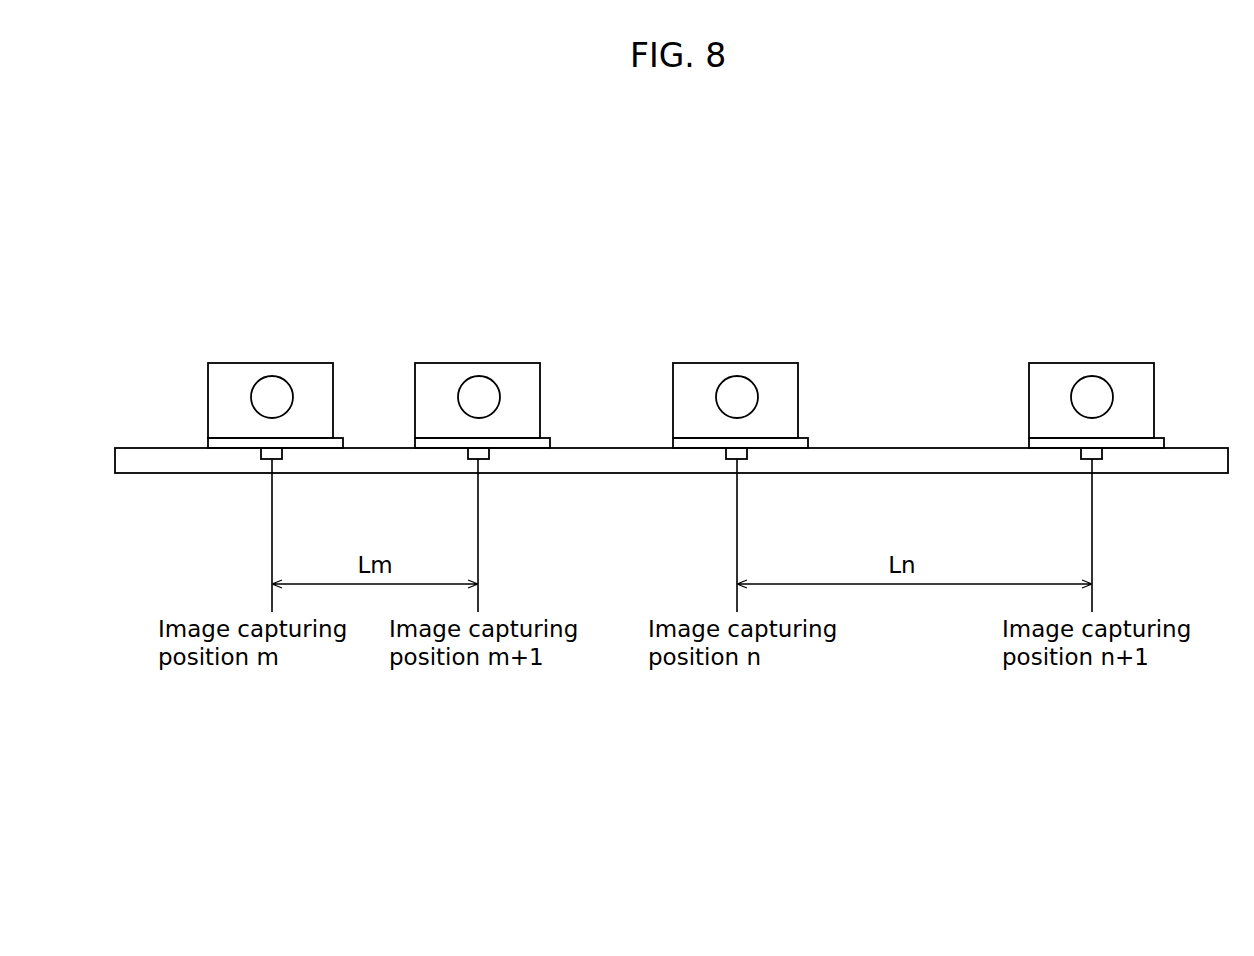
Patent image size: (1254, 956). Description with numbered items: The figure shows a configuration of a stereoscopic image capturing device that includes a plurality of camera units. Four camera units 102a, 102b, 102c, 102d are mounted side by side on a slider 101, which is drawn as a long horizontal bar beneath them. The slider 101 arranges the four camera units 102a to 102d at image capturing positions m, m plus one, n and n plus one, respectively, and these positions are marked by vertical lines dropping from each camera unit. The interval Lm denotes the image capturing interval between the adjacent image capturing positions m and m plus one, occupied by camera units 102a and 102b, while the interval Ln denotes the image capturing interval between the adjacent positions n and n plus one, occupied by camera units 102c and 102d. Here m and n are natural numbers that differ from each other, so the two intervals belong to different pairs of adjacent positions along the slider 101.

The slider 101 is at (178, 462).
The camera unit 102a is at (272, 363).
The camera unit 102b is at (479, 363).
The camera unit 102c is at (737, 363).
The camera unit 102d is at (1092, 363).